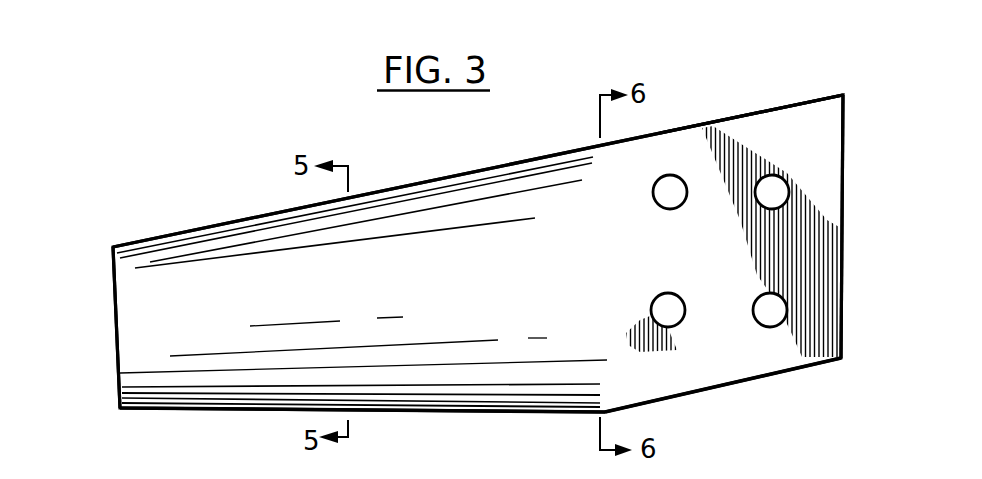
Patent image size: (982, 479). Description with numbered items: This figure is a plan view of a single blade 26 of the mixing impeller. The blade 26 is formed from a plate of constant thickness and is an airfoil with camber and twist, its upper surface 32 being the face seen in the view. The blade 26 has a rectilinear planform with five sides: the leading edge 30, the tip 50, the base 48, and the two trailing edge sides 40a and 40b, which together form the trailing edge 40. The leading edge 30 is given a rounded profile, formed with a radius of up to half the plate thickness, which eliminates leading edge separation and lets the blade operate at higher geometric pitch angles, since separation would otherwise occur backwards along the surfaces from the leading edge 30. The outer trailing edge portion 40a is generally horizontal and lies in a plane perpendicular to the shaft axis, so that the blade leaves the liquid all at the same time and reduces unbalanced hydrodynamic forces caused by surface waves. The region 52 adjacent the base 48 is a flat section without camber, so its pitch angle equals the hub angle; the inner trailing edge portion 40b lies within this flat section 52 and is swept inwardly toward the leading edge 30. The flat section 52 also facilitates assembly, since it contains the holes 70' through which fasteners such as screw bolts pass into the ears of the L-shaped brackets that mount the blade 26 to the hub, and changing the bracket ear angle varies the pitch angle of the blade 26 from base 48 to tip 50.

The blade 26 is at (535, 377).
The leading edge 30 is at (510, 167).
The upper surface 32 is at (246, 267).
The trailing edge 40 is at (497, 413).
The outer trailing edge portion 40a is at (230, 411).
The inner trailing edge portion 40b is at (757, 381).
The base 48 is at (843, 318).
The tip 50 is at (117, 331).
The flat section 52 is at (777, 130).
The holes 70' is at (731, 230).